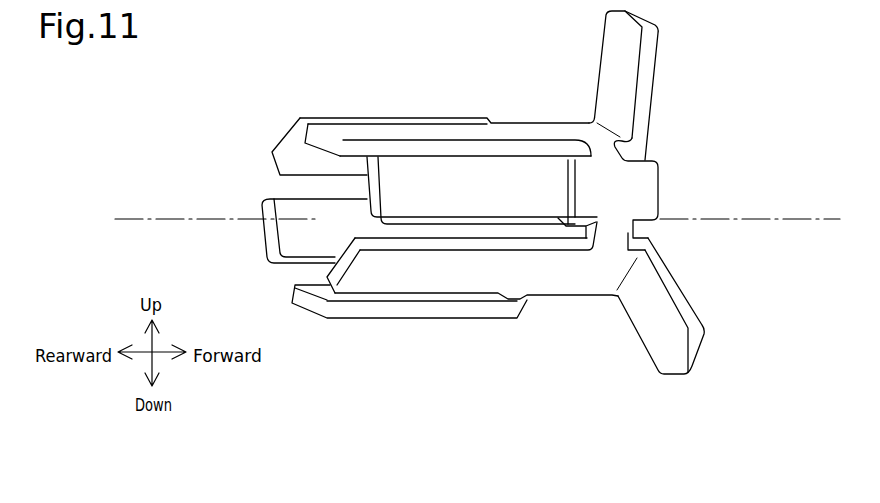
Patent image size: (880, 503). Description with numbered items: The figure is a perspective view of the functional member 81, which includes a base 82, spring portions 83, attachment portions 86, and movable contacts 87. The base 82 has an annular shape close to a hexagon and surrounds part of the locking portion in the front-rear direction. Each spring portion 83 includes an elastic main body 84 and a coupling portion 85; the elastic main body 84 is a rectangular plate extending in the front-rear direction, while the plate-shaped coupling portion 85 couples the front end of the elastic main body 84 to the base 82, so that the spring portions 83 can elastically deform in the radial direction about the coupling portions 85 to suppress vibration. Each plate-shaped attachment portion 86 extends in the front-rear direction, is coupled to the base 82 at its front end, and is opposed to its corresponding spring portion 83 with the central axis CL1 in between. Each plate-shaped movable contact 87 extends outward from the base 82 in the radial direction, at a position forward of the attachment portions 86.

The functional member 81 is at (291, 101).
The base 82 is at (612, 238).
The spring portion 83 is at (445, 247).
The elastic main body 84 is at (407, 170).
The coupling portion 85 is at (528, 300).
The attachment portion 86 is at (518, 130).
The movable contact 87 is at (614, 52).
The central axis CL1 is at (188, 212).